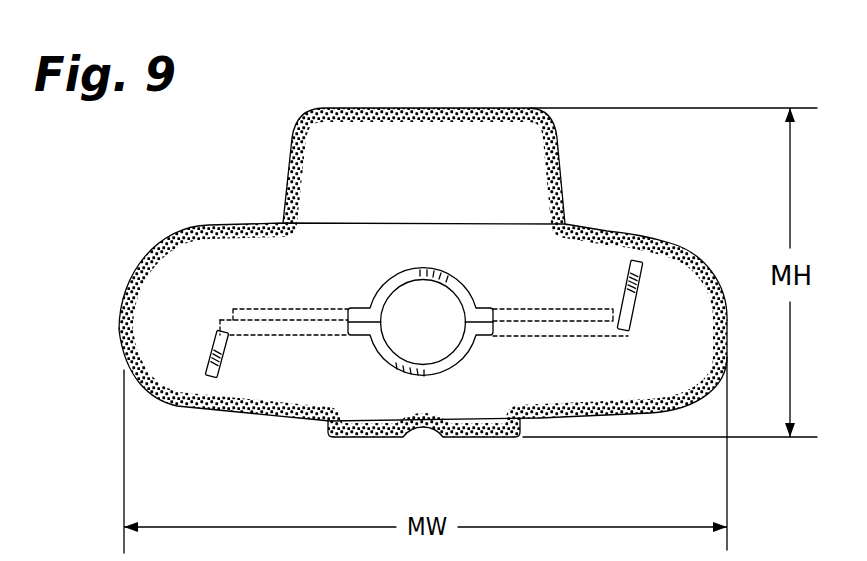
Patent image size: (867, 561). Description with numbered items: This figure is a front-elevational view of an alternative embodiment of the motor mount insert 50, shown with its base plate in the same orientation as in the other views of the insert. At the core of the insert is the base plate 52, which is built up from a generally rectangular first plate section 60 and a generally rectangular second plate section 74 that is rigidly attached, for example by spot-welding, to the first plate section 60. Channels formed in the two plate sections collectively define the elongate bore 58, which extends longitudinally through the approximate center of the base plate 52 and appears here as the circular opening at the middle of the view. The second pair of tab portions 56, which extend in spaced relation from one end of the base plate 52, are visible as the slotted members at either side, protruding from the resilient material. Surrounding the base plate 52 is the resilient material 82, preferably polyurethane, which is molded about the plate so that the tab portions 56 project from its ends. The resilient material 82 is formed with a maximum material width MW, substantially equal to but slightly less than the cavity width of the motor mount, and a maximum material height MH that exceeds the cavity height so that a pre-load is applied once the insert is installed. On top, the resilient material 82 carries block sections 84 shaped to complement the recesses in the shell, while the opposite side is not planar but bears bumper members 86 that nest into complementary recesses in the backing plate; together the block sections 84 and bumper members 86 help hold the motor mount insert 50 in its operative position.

The motor mount insert 50 is at (545, 98).
The base plate 52 is at (499, 298).
The second pair of tab portions 56 is at (213, 342).
The elongate bore 58 is at (408, 311).
The first plate section 60 is at (300, 345).
The second plate section 74 is at (265, 303).
The resilient material 82 is at (655, 227).
The block sections 84 is at (368, 118).
The bumper members 86 is at (486, 432).